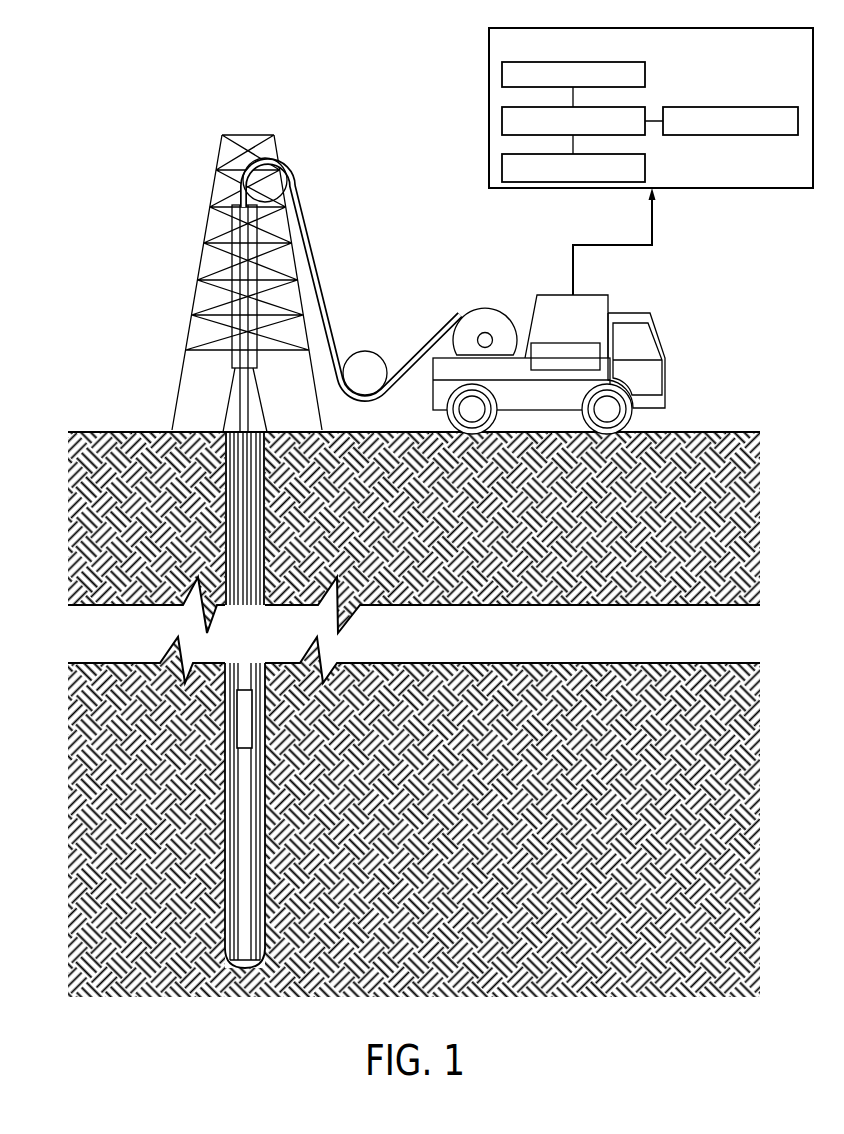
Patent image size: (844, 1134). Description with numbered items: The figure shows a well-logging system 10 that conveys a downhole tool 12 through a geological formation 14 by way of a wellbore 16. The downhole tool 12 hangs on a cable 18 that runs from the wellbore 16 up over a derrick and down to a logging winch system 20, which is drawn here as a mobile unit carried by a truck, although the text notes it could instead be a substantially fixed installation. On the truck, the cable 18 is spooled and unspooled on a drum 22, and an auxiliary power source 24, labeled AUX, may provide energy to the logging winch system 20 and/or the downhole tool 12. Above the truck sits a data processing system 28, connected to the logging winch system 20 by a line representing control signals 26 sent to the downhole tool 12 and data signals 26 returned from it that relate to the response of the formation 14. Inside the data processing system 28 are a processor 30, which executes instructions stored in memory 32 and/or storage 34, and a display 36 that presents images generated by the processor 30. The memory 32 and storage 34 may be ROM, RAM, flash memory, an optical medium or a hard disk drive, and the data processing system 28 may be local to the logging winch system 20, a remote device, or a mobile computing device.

The well-logging system 10 is at (142, 190).
The downhole tool 12 is at (235, 701).
The geological formation 14 is at (83, 766).
The wellbore 16 is at (217, 484).
The cable 18 is at (328, 275).
The logging winch system 20 is at (553, 290).
The drum 22 is at (483, 310).
The auxiliary power source 24 is at (560, 331).
The control signals / data signals 26 is at (652, 215).
The data processing system 28 is at (650, 28).
The processor 30 is at (623, 106).
The memory 32 is at (502, 70).
The storage 34 is at (645, 165).
The display 36 is at (730, 107).